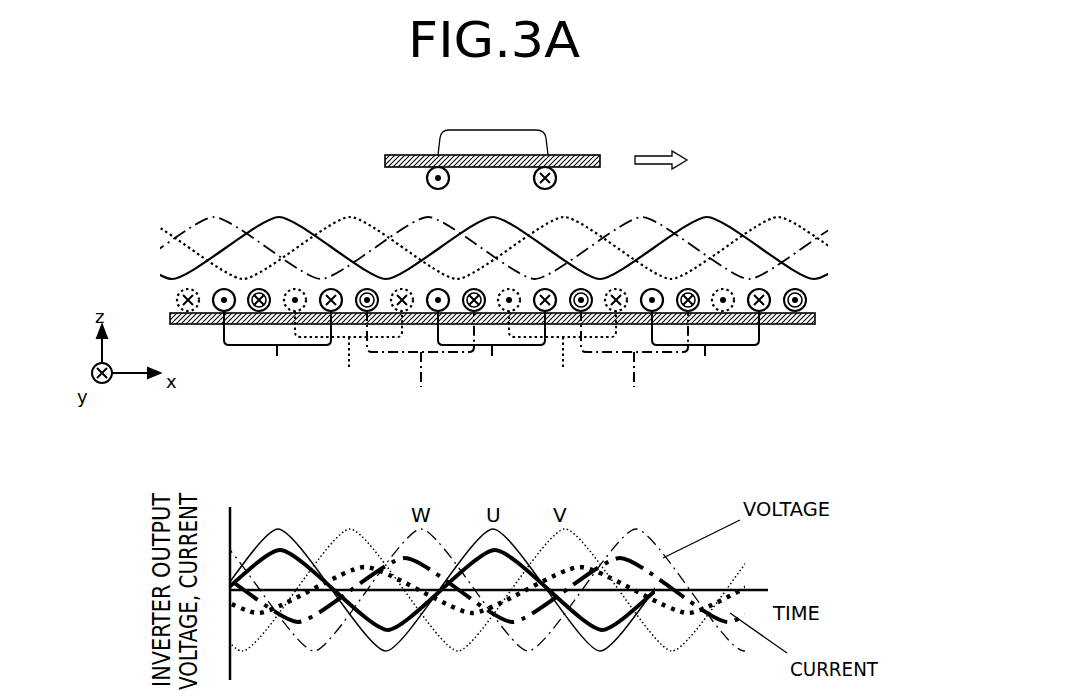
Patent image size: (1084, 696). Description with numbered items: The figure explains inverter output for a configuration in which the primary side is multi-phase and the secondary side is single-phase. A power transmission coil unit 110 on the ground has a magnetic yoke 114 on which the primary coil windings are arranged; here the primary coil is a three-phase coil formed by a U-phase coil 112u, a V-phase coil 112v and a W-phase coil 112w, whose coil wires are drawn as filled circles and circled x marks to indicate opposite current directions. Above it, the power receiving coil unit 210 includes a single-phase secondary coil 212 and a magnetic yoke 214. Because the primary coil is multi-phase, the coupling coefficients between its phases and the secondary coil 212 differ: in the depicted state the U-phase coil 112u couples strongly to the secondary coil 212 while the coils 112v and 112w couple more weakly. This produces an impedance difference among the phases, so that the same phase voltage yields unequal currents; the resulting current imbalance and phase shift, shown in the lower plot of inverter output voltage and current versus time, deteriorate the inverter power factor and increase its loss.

The power transmission coil unit 110 is at (495, 311).
The U-phase coil 112u is at (491, 339).
The V-phase coil 112v is at (455, 346).
The W-phase coil 112w is at (527, 356).
The magnetic yoke 114 is at (815, 320).
The power receiving coil unit 210 is at (552, 141).
The secondary coil 212 is at (493, 130).
The magnetic yoke 214 is at (385, 160).